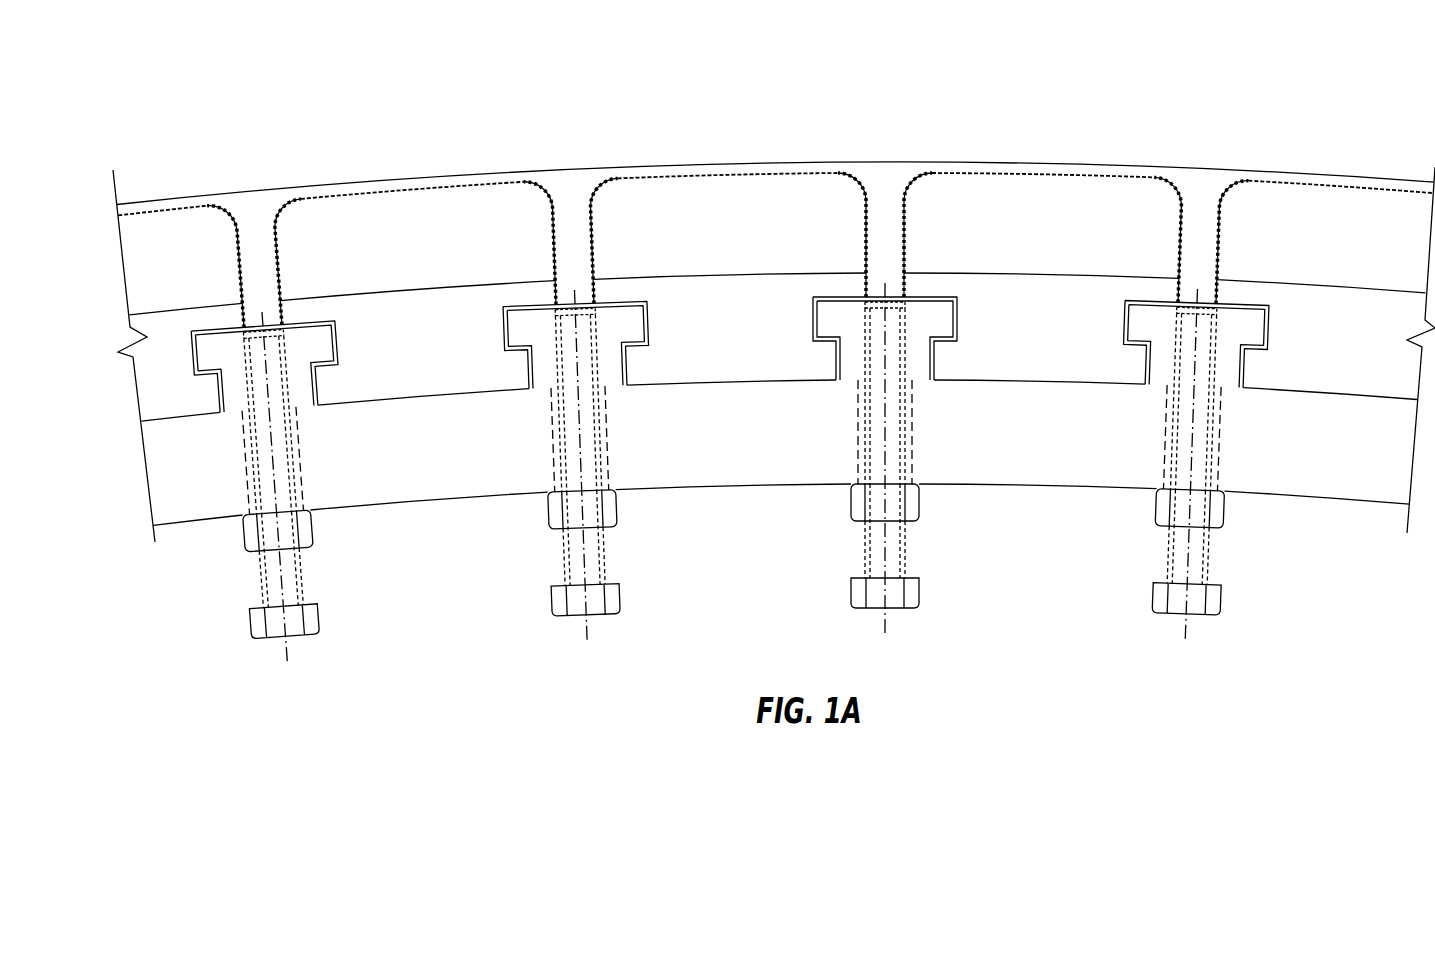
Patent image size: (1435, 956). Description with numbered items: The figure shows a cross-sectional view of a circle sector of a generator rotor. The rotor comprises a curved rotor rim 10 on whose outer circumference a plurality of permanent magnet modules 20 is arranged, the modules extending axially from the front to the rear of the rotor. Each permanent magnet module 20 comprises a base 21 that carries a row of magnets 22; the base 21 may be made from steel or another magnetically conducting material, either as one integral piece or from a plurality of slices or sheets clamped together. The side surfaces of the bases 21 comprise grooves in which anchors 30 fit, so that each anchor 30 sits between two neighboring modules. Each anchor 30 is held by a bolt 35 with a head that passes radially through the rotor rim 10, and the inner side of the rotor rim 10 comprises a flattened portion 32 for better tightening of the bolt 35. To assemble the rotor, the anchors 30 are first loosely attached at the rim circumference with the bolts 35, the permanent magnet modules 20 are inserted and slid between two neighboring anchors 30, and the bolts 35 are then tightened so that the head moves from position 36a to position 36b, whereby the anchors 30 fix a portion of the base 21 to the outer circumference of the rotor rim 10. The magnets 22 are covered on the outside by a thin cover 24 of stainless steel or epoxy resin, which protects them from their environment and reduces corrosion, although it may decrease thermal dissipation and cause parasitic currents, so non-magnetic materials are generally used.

The rotor rim 10 is at (730, 458).
The permanent magnet module 20 is at (345, 172).
The base 21 is at (690, 300).
The magnets 22 is at (773, 212).
The cover 24 is at (890, 162).
The anchor 30 is at (537, 330).
The flattened portion 32 is at (835, 488).
The bolt 35 is at (893, 450).
The head position before tightening 36a is at (913, 590).
The head position after tightening 36b is at (913, 500).